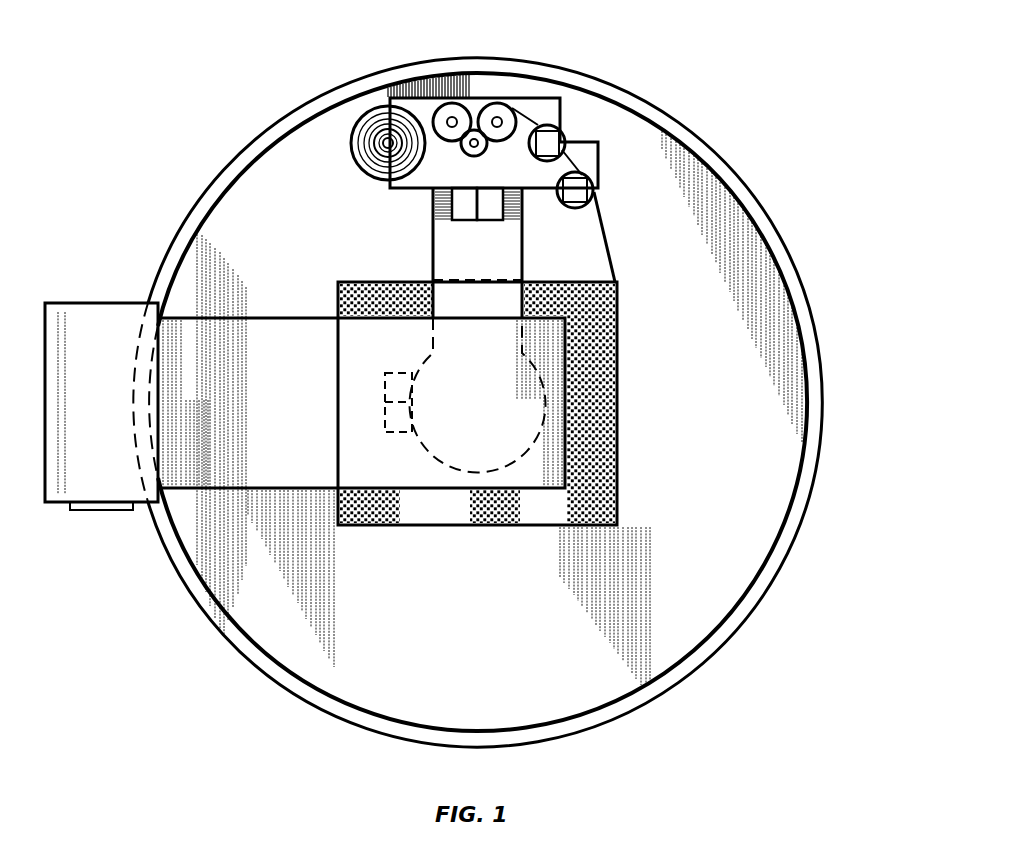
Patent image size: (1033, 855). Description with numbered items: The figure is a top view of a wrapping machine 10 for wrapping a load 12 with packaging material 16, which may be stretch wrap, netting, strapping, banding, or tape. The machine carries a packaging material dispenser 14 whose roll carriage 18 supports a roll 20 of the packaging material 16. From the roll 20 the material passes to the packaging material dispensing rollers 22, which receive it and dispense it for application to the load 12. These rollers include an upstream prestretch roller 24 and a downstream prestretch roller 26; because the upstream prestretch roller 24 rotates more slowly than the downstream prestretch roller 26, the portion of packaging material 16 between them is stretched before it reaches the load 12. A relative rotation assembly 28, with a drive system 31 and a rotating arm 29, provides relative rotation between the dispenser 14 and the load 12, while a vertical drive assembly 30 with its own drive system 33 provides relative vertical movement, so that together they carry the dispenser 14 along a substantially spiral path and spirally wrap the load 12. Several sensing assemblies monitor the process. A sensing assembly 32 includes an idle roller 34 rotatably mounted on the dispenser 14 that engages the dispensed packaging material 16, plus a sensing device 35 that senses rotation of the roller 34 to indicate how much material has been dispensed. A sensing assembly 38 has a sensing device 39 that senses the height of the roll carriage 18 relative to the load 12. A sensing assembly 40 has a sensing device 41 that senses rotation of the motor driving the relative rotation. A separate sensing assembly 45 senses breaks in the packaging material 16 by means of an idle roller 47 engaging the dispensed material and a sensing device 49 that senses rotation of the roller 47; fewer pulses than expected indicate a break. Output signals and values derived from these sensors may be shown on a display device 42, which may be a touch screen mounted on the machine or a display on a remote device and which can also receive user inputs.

The wrapping machine 10 is at (151, 105).
The load 12 is at (385, 525).
The packaging material dispenser 14 is at (472, 92).
The packaging material 16 is at (611, 264).
The roll carriage 18 is at (413, 80).
The roll 20 is at (356, 146).
The packaging material dispensing rollers 22 is at (477, 106).
The upstream prestretch roller 24 is at (448, 141).
The downstream prestretch roller 26 is at (505, 141).
The relative rotation assembly 28 is at (451, 468).
The rotating arm 29 is at (433, 250).
The vertical drive assembly 30 is at (464, 224).
The drive system 31 is at (394, 372).
The sensing assembly 32 is at (578, 119).
The drive system 33 is at (447, 210).
The roller 34 is at (559, 160).
The sensing device 35 is at (530, 125).
The sensing assembly 38 is at (487, 224).
The sensing device 39 is at (498, 222).
The sensing assembly 40 is at (381, 418).
The sensing device 41 is at (400, 433).
The display device 42 is at (93, 512).
The sensing assembly 45 is at (600, 193).
The roller 47 is at (570, 208).
The sensing device 49 is at (594, 204).